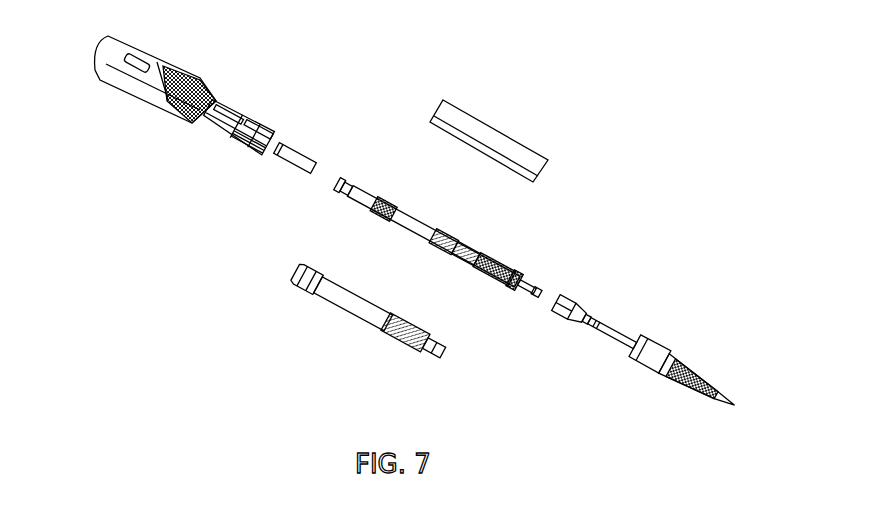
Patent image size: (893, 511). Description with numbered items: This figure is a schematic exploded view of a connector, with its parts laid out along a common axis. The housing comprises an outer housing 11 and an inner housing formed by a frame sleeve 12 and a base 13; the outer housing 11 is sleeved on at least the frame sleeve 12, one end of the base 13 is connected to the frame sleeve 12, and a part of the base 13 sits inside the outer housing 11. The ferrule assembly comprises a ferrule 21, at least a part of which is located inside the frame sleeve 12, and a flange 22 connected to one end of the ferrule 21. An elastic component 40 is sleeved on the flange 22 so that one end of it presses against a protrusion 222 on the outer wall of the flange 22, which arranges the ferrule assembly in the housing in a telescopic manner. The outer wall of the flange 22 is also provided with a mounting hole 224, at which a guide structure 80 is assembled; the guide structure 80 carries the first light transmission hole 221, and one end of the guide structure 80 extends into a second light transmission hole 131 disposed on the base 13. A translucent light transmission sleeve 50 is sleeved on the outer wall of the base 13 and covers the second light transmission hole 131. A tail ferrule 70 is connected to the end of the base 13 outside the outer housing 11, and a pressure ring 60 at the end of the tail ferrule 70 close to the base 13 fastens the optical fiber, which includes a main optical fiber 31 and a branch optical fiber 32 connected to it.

The outer housing 11 is at (142, 95).
The frame sleeve 12 is at (227, 133).
The ferrule 21 is at (292, 157).
The light transmission sleeve 50 is at (495, 130).
The protrusion 222 is at (348, 180).
The flange 22 is at (410, 232).
The elastic component 40 is at (375, 208).
The mounting hole 224 is at (453, 249).
The first light transmission hole 221 is at (503, 270).
The guide structure 80 is at (503, 283).
The main optical fiber 31 is at (540, 292).
The branch optical fiber 32 is at (533, 292).
The pressure ring 60 is at (568, 298).
The tail ferrule 70 is at (658, 347).
The base 13 is at (328, 302).
The second light transmission hole 131 is at (395, 340).